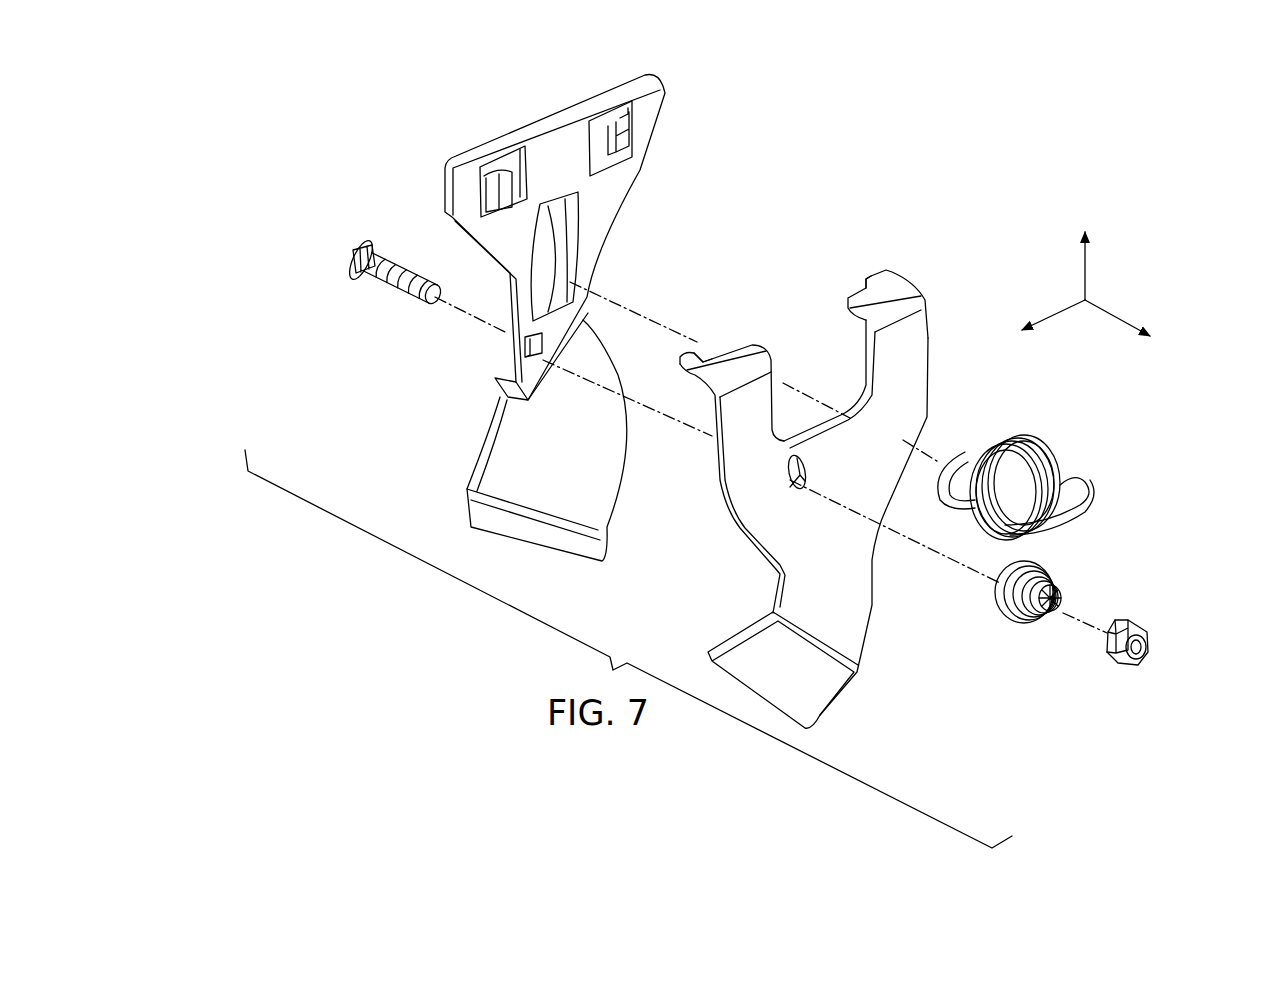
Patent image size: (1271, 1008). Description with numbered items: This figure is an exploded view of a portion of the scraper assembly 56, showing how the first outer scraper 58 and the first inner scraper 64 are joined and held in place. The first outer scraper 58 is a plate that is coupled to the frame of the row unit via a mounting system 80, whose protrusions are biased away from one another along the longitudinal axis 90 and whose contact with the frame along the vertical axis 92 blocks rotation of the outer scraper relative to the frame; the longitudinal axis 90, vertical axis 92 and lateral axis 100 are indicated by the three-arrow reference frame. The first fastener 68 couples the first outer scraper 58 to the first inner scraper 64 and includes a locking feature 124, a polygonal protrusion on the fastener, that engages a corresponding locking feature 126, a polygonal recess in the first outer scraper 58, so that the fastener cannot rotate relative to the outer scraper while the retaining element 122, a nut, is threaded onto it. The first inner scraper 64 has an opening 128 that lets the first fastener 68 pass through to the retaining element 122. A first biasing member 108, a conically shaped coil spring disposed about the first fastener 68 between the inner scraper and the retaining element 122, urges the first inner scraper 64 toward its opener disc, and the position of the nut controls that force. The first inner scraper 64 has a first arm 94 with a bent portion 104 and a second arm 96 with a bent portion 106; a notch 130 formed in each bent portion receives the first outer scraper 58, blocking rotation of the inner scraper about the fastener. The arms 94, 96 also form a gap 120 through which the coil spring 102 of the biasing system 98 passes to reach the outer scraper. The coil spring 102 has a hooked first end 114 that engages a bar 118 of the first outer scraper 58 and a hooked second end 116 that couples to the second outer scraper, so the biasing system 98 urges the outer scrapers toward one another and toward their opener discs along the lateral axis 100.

The scraper assembly 56 is at (852, 160).
The first outer scraper 58 is at (548, 116).
The first inner scraper 64 is at (820, 472).
The first fastener 68 is at (358, 243).
The mounting system 80 is at (537, 317).
The longitudinal axis 90 is at (1050, 316).
The vertical axis 92 is at (1088, 272).
The first arm 94 is at (917, 342).
The second arm 96 is at (727, 443).
The biasing system 98 is at (1049, 460).
The lateral axis 100 is at (1118, 318).
The coil spring 102 is at (1052, 447).
The bent portion 104 is at (886, 277).
The bent portion 106 is at (728, 352).
The first biasing member 108 is at (1030, 622).
The first end 114 is at (963, 445).
The second end 116 is at (1080, 514).
The bar 118 is at (568, 262).
The gap 120 is at (803, 301).
The retaining element 122 is at (1126, 662).
The locking feature 124 is at (361, 248).
The locking feature 126 is at (540, 340).
The opening 128 is at (806, 468).
The notch 130 is at (705, 354).